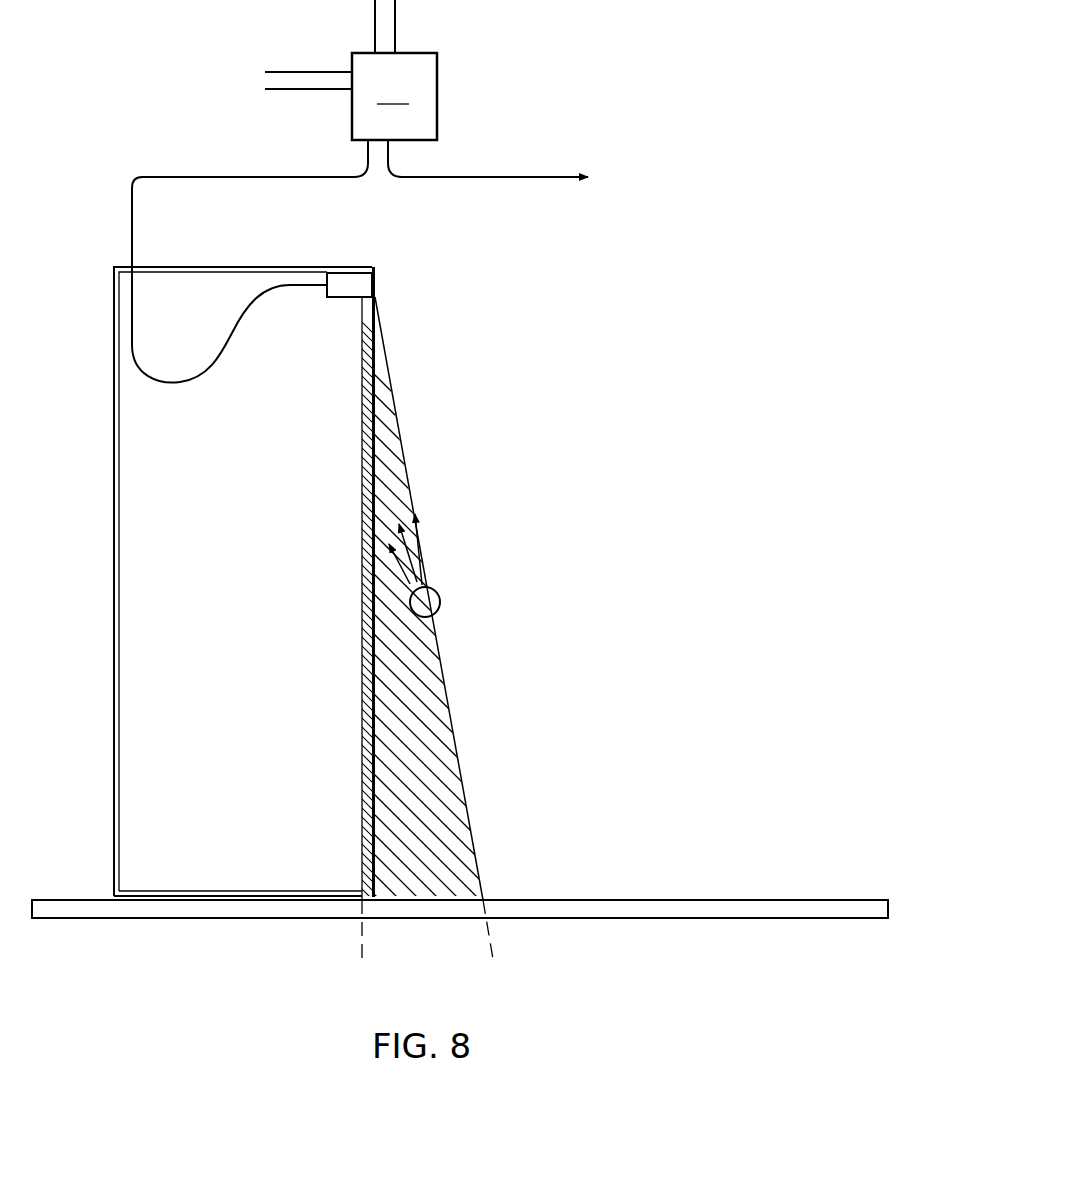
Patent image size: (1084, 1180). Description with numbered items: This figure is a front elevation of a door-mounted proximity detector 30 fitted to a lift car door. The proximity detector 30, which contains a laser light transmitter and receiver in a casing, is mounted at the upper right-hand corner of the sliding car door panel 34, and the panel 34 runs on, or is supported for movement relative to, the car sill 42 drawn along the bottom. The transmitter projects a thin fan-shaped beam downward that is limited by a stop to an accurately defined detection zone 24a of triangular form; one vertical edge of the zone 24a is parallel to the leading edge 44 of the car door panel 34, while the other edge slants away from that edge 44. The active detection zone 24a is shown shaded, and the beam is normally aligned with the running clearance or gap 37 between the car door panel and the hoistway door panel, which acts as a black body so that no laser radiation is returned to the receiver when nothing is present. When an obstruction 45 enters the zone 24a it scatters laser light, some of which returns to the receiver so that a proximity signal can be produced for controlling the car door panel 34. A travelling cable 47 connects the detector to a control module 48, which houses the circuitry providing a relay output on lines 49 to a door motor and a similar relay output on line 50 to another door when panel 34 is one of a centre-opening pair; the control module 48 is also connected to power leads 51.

The control module 48 is at (437, 100).
The power leads 51 is at (375, 27).
The lines 49 is at (300, 70).
The line 50 is at (480, 177).
The travelling cable 47 is at (135, 246).
The car door panel 34 is at (260, 536).
The proximity detector 30 is at (348, 284).
The leading edge 44 is at (374, 305).
The detection zone 24a is at (420, 726).
The obstruction 45 is at (436, 597).
The car sill 42 is at (738, 899).
The running clearance or gap 37 is at (496, 895).